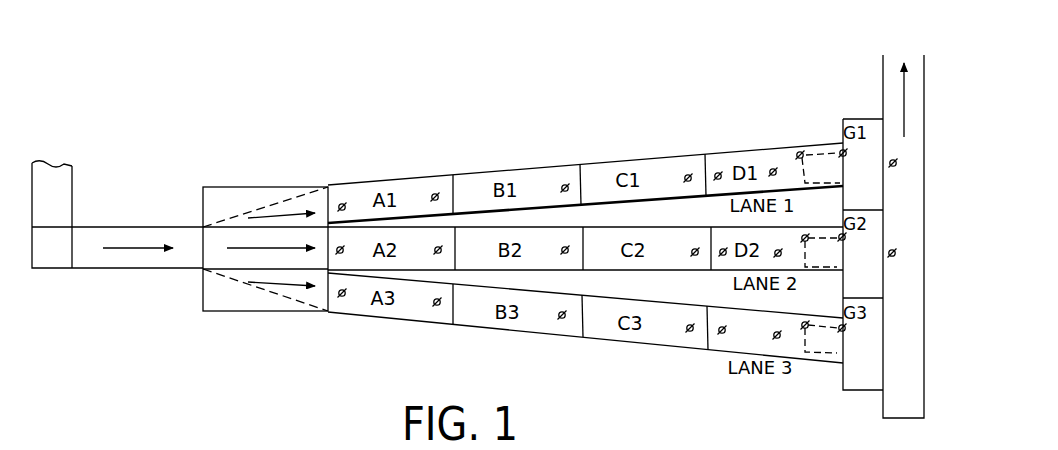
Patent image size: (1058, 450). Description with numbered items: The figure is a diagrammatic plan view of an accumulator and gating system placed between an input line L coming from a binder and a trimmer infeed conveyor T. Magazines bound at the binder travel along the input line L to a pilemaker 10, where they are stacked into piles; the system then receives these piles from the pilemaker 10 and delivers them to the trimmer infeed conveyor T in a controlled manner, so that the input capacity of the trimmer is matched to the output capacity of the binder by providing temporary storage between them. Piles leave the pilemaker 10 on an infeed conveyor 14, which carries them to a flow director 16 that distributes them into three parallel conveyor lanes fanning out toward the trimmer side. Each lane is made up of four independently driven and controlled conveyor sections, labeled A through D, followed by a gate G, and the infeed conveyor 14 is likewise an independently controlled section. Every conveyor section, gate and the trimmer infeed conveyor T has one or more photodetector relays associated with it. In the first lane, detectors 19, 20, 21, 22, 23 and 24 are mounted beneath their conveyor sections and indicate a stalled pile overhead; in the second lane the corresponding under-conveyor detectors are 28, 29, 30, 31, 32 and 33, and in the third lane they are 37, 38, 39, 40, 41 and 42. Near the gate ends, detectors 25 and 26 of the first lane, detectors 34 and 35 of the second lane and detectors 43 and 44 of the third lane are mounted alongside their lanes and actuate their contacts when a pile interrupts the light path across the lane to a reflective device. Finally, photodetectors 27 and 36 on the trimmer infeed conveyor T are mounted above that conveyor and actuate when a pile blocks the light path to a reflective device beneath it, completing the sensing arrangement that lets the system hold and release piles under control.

The pilemaker 10 is at (42, 260).
The input line L is at (53, 182).
The infeed conveyor 14 is at (113, 232).
The flow director 16 is at (230, 185).
The photodetector relay 19 is at (340, 203).
The photodetector relay 20 is at (437, 193).
The photodetector relay 21 is at (565, 183).
The photodetector relay 22 is at (688, 173).
The photodetector relay 23 is at (718, 171).
The photodetector relay 24 is at (773, 167).
The photodetector relay 25 is at (803, 151).
The photodetector relay 26 is at (846, 157).
The photodetector relay 27 is at (895, 168).
The photodetector relay 28 is at (343, 245).
The photodetector relay 29 is at (436, 256).
The photodetector relay 30 is at (576, 236).
The photodetector relay 31 is at (692, 246).
The photodetector relay 32 is at (723, 246).
The photodetector relay 33 is at (783, 257).
The photodetector relay 34 is at (807, 233).
The photodetector relay 35 is at (845, 242).
The photodetector relay 36 is at (893, 258).
The photodetector relay 37 is at (341, 298).
The photodetector relay 38 is at (436, 307).
The photodetector relay 39 is at (561, 320).
The photodetector relay 40 is at (689, 333).
The photodetector relay 41 is at (721, 326).
The photodetector relay 42 is at (778, 331).
The photodetector relay 43 is at (808, 328).
The photodetector relay 44 is at (845, 332).
The trimmer infeed conveyor T is at (913, 248).